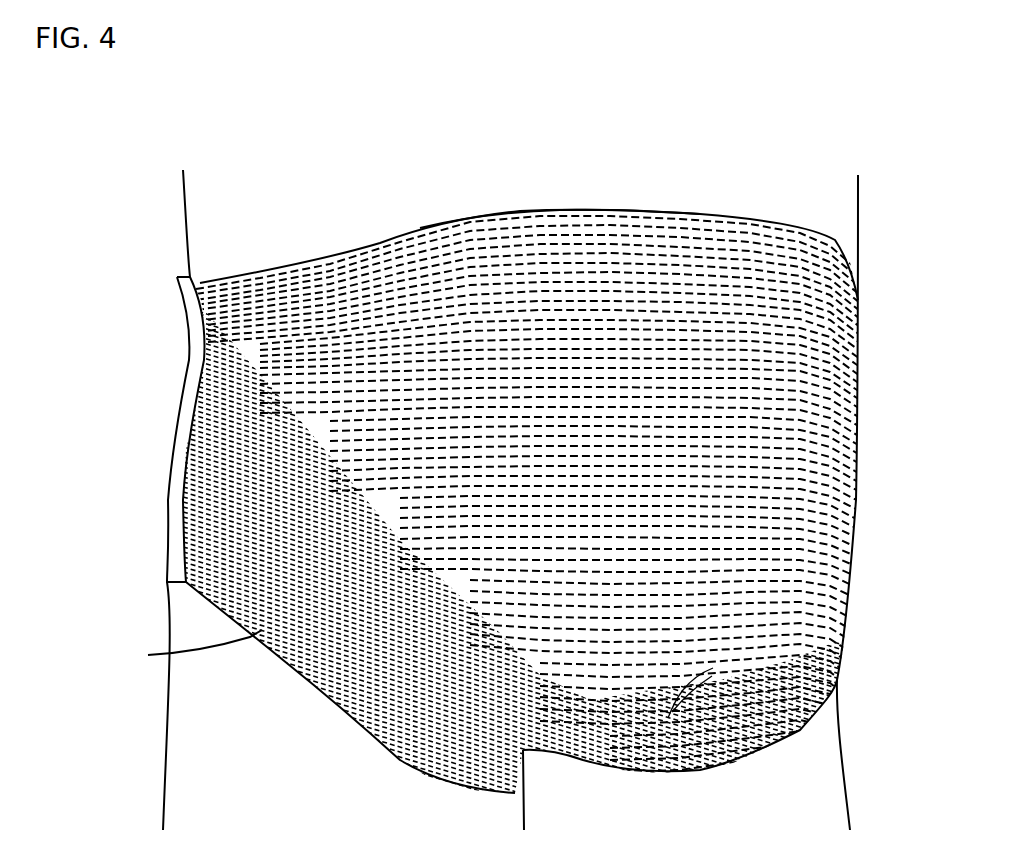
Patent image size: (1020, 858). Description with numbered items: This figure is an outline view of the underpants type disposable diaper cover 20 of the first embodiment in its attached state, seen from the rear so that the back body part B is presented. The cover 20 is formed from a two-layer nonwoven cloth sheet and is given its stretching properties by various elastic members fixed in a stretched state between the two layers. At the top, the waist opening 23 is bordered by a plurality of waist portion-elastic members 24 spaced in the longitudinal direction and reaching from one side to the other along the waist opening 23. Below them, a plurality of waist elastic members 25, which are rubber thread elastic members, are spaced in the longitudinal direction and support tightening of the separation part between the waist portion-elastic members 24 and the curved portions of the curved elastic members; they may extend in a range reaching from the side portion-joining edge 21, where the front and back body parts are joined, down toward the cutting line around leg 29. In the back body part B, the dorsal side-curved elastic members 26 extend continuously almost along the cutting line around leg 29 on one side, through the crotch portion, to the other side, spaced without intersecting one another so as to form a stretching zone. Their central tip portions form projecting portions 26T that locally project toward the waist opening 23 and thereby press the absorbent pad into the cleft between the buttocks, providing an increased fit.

The underpants type disposable diaper cover 20 is at (168, 320).
The side portion-joining edge 21 is at (178, 478).
The waist opening 23 is at (493, 210).
The waist portion-elastic members 24 is at (333, 265).
The waist elastic members 25 is at (638, 398).
The dorsal side-curved elastic members 26 is at (470, 788).
The projecting portions 26T is at (713, 670).
The cutting line around leg 29 is at (866, 748).
The back body part B is at (830, 370).